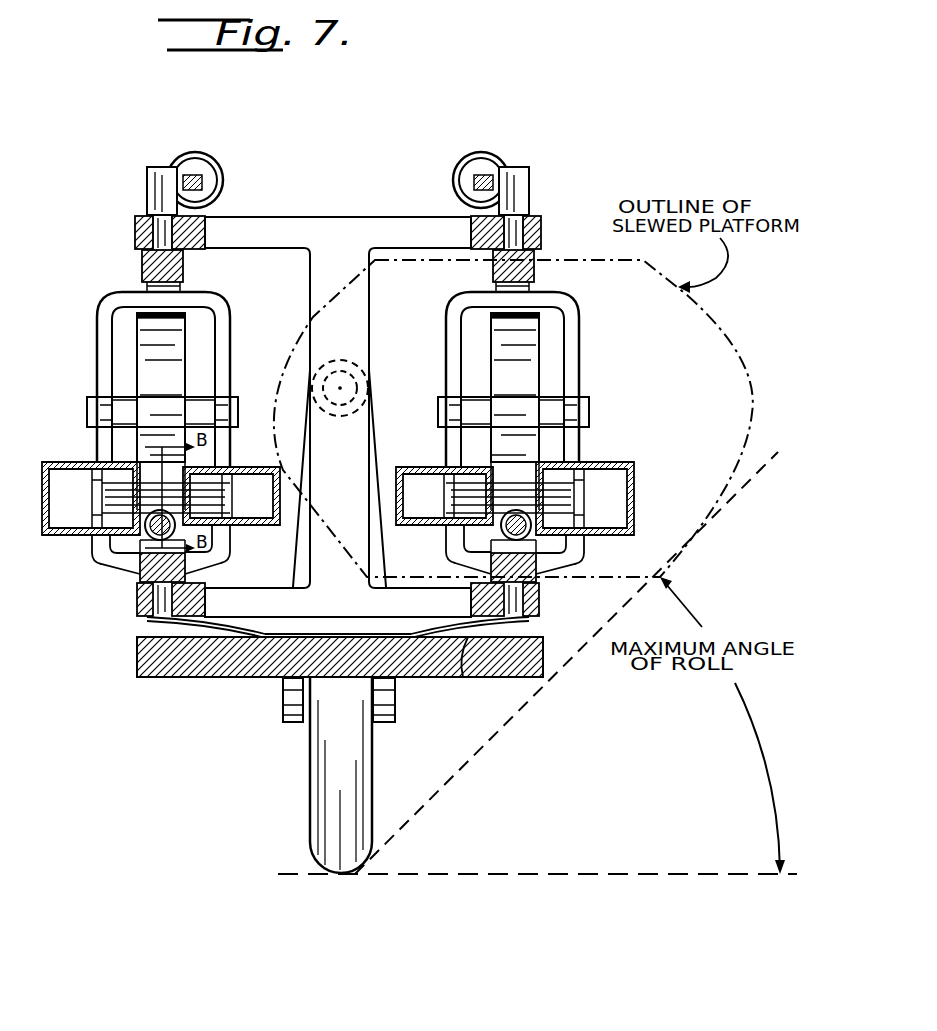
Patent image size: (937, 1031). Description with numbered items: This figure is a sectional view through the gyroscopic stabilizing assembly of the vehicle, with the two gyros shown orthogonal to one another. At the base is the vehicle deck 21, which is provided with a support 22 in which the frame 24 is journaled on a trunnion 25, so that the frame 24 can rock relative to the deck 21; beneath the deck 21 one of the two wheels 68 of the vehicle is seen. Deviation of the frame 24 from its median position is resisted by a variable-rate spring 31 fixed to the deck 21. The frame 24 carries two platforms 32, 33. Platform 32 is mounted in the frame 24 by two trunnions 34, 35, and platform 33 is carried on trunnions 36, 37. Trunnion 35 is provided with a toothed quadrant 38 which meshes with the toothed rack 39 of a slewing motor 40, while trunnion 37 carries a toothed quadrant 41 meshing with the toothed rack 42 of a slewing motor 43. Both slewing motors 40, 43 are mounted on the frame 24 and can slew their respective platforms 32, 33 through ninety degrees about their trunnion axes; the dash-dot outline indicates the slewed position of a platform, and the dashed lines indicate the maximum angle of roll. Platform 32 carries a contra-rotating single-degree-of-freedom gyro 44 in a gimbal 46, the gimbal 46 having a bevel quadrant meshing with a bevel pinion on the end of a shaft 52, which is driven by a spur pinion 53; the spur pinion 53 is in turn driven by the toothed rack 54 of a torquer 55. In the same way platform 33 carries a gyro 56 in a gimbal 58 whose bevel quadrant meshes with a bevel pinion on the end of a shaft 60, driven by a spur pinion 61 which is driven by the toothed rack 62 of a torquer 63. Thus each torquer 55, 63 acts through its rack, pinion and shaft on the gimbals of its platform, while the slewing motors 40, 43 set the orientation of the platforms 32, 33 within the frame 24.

The vehicle deck 21 is at (140, 637).
The support 22 is at (297, 562).
The frame 24 is at (135, 225).
The trunnion 25 is at (345, 385).
The variable-rate spring 31 is at (462, 677).
The platform 32 is at (142, 266).
The platform 33 is at (540, 266).
The trunnion 34 is at (150, 620).
The trunnion 35 is at (140, 222).
The trunnion 36 is at (520, 620).
The trunnion 37 is at (540, 222).
The toothed quadrant 38 is at (180, 172).
The toothed rack 39 is at (195, 176).
The slewing motor 40 is at (222, 167).
The toothed quadrant 41 is at (503, 168).
The toothed rack 42 is at (484, 175).
The slewing motor 43 is at (455, 157).
The gyro 44 is at (145, 330).
The gimbal 46 is at (105, 305).
The shaft 52 is at (130, 560).
The spur pinion 53 is at (150, 532).
The toothed rack 54 is at (95, 510).
The torquer 55 is at (50, 462).
The gyro 56 is at (530, 343).
The gimbal 58 is at (577, 306).
The shaft 60 is at (545, 553).
The spur pinion 61 is at (530, 528).
The toothed rack 62 is at (555, 485).
The torquer 63 is at (405, 468).
The wheel 68 is at (318, 757).